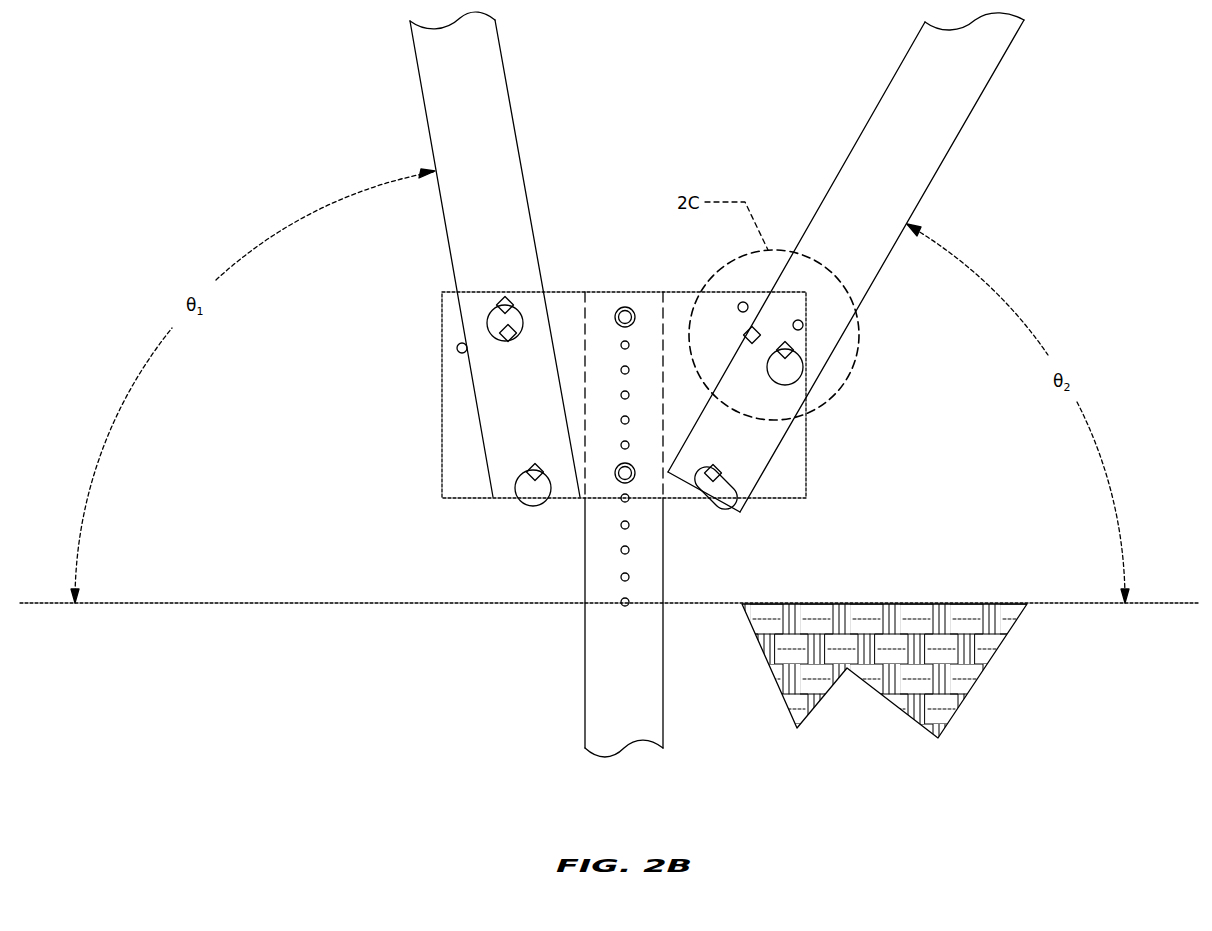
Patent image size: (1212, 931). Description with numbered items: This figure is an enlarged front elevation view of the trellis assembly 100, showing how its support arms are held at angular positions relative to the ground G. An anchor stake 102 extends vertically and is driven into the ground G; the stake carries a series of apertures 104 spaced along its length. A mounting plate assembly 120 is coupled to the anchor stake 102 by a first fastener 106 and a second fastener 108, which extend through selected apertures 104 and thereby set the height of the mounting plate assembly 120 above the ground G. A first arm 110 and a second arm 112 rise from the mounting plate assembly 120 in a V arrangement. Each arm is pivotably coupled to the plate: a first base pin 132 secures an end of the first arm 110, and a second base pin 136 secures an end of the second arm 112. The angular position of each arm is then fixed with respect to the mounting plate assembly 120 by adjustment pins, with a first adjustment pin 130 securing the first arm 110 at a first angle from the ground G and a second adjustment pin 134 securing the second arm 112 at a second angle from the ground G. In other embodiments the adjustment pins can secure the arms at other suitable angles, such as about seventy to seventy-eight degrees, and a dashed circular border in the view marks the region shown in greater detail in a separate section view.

The assembly 100 is at (1113, 228).
The anchor stake 102 is at (598, 653).
The apertures 104 is at (625, 548).
The first fastener 106 is at (625, 306).
The second fastener 108 is at (632, 481).
The first arm 110 is at (437, 88).
The second arm 112 is at (952, 113).
The mounting plate assembly 120 is at (812, 450).
The first adjustment pin 130 is at (503, 306).
The first base pin 132 is at (527, 476).
The second adjustment pin 134 is at (790, 352).
The second base pin 136 is at (714, 476).
The ground G is at (991, 650).